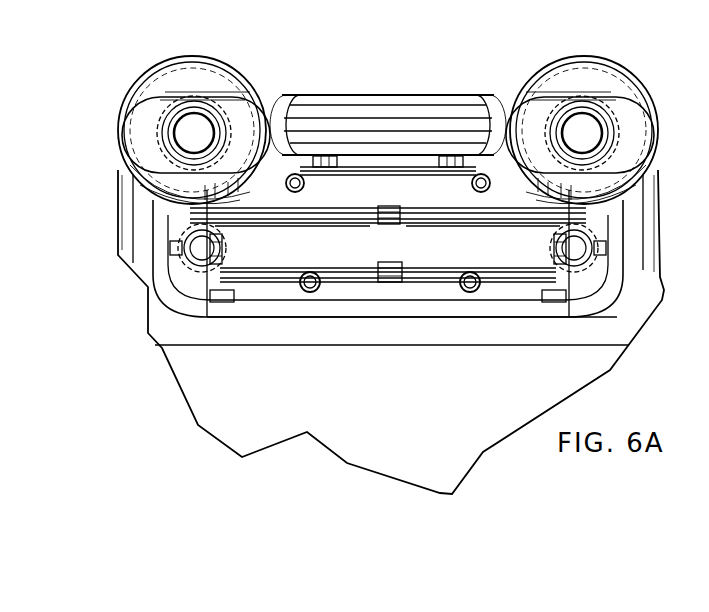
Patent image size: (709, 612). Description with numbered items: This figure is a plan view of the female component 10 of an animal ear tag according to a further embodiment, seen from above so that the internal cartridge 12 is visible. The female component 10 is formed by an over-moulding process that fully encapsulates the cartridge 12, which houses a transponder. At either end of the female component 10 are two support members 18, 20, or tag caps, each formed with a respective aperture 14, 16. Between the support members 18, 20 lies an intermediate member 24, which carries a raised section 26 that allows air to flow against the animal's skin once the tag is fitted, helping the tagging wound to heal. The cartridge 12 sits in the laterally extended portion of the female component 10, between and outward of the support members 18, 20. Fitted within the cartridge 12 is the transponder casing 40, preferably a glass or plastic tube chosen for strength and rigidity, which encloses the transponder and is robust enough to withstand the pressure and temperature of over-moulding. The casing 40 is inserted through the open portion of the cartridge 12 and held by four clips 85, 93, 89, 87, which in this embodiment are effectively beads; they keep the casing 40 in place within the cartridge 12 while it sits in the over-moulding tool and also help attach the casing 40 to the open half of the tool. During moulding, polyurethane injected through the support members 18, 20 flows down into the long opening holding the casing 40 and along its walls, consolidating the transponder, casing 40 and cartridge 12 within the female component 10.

The female component 10 is at (137, 272).
The cartridge 12 is at (509, 288).
The aperture 14 is at (196, 129).
The aperture 16 is at (575, 138).
The support member 18 is at (137, 92).
The support member 20 is at (651, 102).
The intermediate member 24 is at (333, 95).
The raised section 26 is at (405, 142).
The transponder casing 40 is at (535, 257).
The clip 85 is at (299, 224).
The clip 87 is at (472, 218).
The clip 89 is at (453, 268).
The clip 93 is at (321, 270).